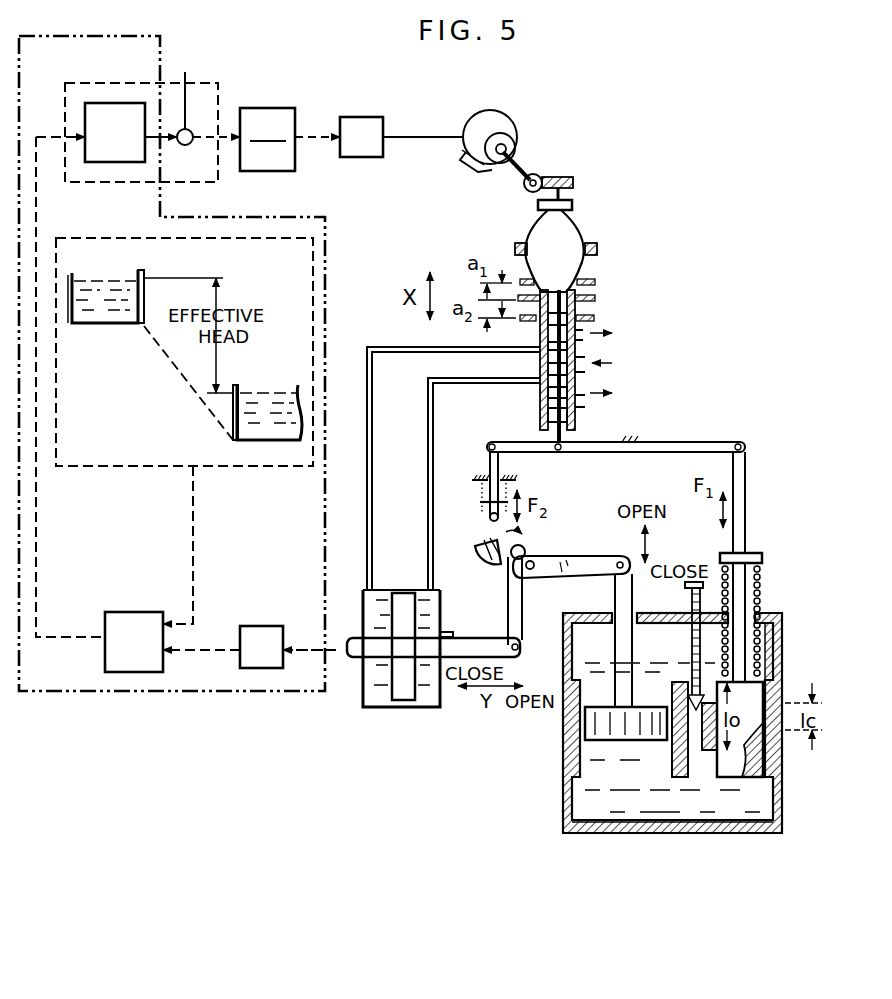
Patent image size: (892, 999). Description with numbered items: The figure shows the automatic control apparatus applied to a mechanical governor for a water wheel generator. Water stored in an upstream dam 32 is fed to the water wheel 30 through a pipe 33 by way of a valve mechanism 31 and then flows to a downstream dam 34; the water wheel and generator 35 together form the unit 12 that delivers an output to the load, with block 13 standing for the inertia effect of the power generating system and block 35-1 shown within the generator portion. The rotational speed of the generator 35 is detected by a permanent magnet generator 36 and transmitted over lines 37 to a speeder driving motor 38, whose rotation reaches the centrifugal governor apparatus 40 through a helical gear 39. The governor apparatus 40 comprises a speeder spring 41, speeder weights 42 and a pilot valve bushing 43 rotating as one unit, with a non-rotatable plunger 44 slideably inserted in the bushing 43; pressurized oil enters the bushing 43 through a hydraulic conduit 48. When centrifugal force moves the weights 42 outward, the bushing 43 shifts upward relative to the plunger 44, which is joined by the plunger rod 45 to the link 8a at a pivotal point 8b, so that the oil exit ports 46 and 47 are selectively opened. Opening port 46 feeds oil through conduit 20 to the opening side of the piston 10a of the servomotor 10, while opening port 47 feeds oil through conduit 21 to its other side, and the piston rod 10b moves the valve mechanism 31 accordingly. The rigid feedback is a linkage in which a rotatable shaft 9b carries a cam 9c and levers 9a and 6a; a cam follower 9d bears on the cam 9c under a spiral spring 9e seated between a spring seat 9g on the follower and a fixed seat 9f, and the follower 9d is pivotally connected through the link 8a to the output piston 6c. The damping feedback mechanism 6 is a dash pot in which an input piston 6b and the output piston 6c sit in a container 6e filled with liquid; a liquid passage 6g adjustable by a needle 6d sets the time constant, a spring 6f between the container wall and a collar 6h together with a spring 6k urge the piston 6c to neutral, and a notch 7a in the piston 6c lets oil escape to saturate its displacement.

The water wheel and generator unit 12 is at (193, 692).
The generator 35 is at (207, 82).
The setting unit 35-1 is at (115, 132).
The inertia effect block 13 is at (268, 108).
The permanent magnet generator 36 is at (363, 117).
The lines 37 is at (430, 137).
The speeder driving motor 38 is at (500, 122).
The helical gear 39 is at (536, 175).
The centrifugal governor apparatus 40 is at (591, 232).
The speeder weights 42 is at (598, 250).
The speeder spring 41 is at (580, 275).
The pilot valve bushing 43 is at (588, 300).
The plunger 44 is at (582, 320).
The hydraulic conduit 48 is at (583, 353).
The plunger rod 45 is at (576, 409).
The oil exit port 46 is at (540, 351).
The oil exit port 47 is at (540, 384).
The pipe 20 is at (365, 477).
The conduit 21 is at (427, 490).
The link 8a is at (675, 441).
The pivotal point 8b is at (560, 453).
The lever 9a is at (508, 596).
The rotatable shaft 9b is at (525, 550).
The cam 9c is at (476, 545).
The cam follower 9d is at (488, 517).
The spiral spring 9e is at (474, 480).
The guide 9f is at (515, 480).
The spring seat 9g is at (480, 502).
The damping feedback mechanism 6 is at (796, 618).
The lever 6a is at (566, 578).
The input piston 6b is at (622, 740).
The output piston 6c is at (746, 503).
The needle 6d is at (690, 662).
The container 6e is at (626, 833).
The spring 6f is at (761, 593).
The liquid passage 6g is at (697, 748).
The collar 6h is at (758, 560).
The spring 6k is at (764, 648).
The notch 7a is at (760, 762).
The servomotor 10 is at (390, 708).
The piston 10a is at (412, 700).
The piston rod 10b is at (360, 658).
The water wheel 30 is at (127, 612).
The valve mechanism 31 is at (258, 626).
The upstream dam 32 is at (145, 273).
The pipe 33 is at (182, 378).
The downstream dam 34 is at (252, 396).